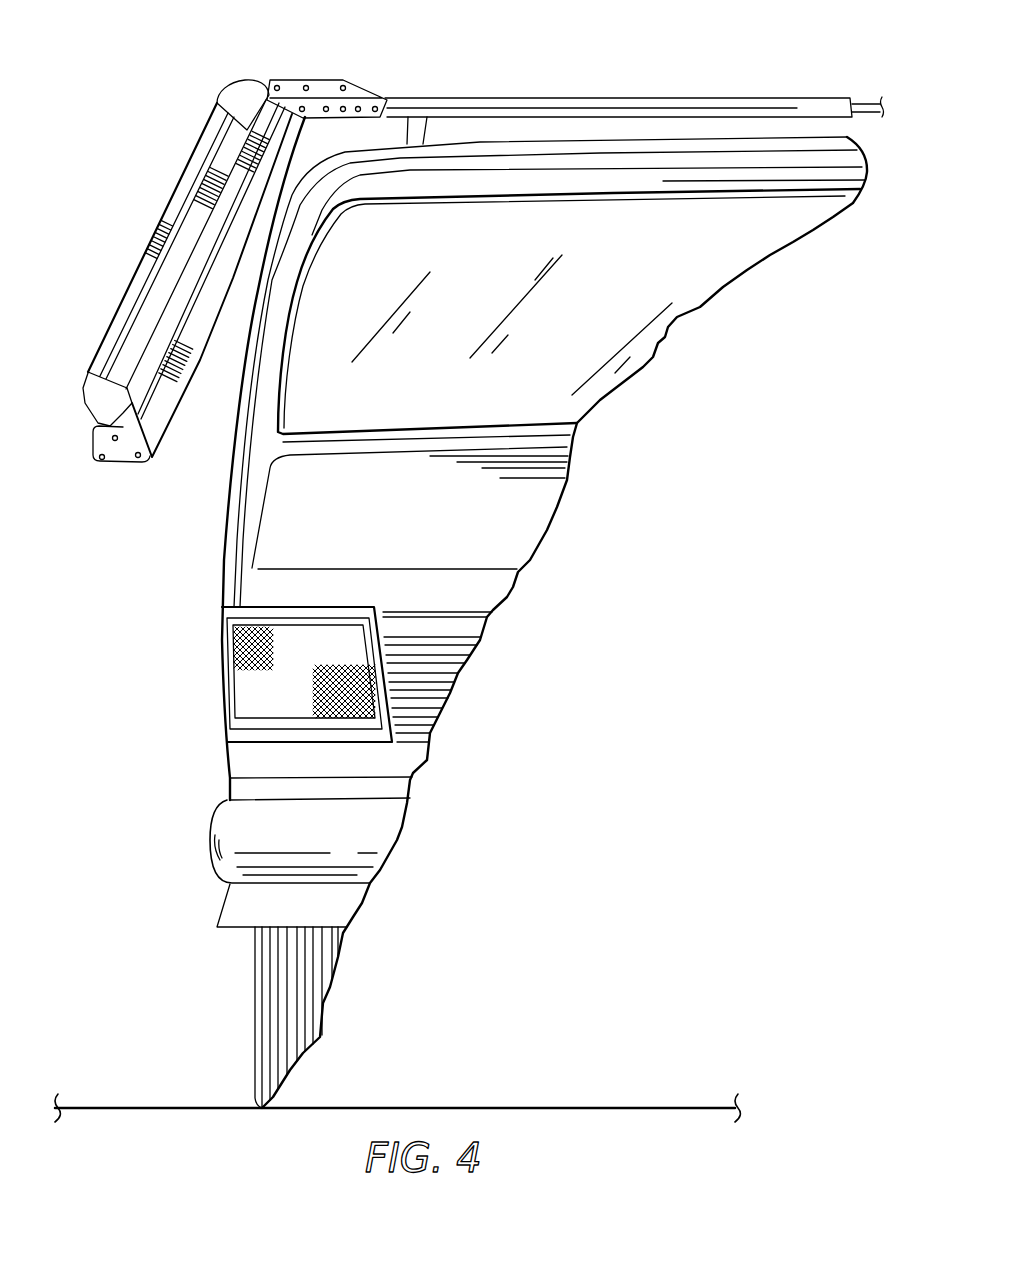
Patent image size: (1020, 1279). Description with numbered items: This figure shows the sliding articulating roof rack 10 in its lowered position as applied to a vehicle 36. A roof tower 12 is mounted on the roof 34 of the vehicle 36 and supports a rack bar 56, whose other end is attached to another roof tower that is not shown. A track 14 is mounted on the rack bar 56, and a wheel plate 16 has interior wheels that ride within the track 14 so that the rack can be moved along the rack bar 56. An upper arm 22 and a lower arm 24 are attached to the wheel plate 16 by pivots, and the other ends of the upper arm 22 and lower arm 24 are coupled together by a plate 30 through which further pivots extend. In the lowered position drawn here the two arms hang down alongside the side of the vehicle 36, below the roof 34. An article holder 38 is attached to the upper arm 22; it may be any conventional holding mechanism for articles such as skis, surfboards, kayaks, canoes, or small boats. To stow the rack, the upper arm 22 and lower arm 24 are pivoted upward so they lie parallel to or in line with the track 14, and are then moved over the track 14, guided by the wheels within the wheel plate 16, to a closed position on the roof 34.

The sliding and articulating roof rack 10 is at (575, 91).
The roof tower 12 is at (397, 132).
The track 14 is at (598, 98).
The wheel plate 16 is at (327, 87).
The upper arm 22 is at (130, 405).
The lower arm 24 is at (160, 412).
The plate 30 is at (120, 450).
The roof 34 is at (478, 136).
The vehicle 36 is at (212, 628).
The article holder 38 is at (174, 305).
The rack bar 56 is at (870, 98).